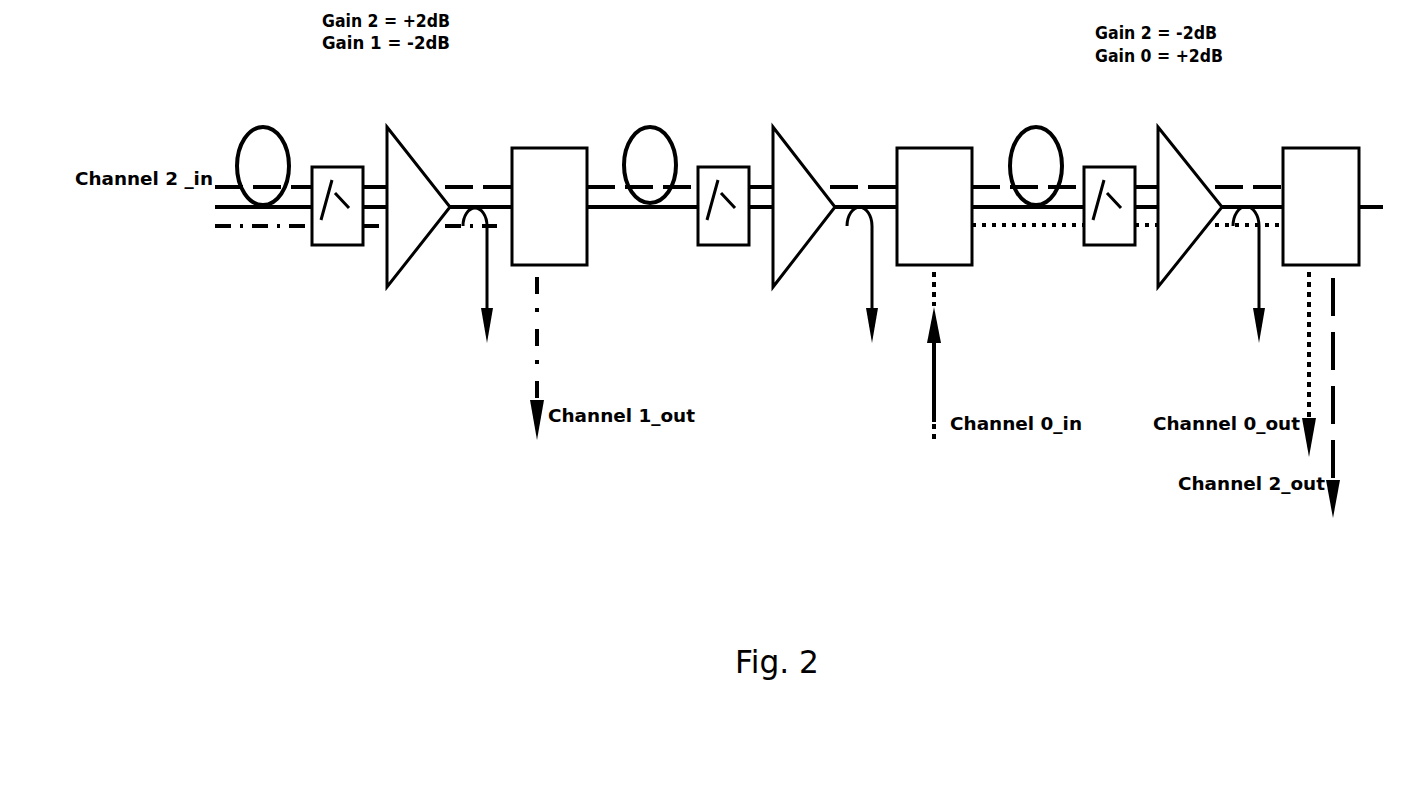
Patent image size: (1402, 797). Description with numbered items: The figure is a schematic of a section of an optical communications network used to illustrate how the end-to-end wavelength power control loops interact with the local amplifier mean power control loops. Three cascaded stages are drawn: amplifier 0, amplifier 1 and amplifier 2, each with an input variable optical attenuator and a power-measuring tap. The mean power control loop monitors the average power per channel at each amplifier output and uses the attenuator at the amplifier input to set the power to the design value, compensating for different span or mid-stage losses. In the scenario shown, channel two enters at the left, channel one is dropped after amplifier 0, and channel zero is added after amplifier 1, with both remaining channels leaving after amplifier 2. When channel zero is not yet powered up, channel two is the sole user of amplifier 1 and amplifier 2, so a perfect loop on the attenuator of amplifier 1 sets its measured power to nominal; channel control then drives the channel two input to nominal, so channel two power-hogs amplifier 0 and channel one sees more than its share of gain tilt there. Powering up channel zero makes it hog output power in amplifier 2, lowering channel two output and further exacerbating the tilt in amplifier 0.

The amplifier 0 is at (412, 222).
The amplifier 1 is at (798, 222).
The amplifier 2 is at (1184, 222).